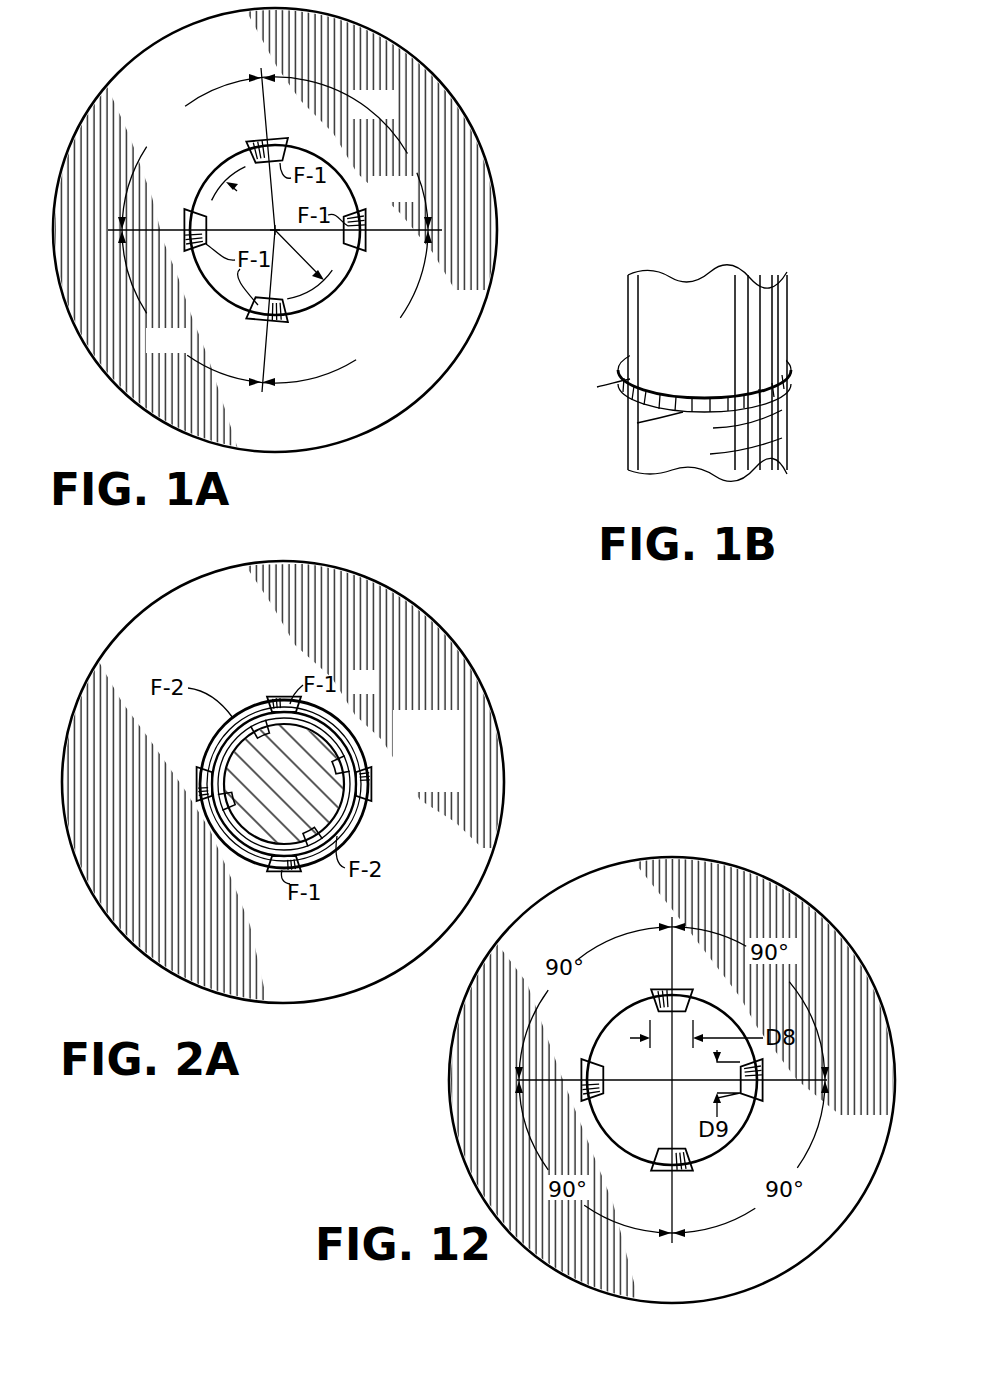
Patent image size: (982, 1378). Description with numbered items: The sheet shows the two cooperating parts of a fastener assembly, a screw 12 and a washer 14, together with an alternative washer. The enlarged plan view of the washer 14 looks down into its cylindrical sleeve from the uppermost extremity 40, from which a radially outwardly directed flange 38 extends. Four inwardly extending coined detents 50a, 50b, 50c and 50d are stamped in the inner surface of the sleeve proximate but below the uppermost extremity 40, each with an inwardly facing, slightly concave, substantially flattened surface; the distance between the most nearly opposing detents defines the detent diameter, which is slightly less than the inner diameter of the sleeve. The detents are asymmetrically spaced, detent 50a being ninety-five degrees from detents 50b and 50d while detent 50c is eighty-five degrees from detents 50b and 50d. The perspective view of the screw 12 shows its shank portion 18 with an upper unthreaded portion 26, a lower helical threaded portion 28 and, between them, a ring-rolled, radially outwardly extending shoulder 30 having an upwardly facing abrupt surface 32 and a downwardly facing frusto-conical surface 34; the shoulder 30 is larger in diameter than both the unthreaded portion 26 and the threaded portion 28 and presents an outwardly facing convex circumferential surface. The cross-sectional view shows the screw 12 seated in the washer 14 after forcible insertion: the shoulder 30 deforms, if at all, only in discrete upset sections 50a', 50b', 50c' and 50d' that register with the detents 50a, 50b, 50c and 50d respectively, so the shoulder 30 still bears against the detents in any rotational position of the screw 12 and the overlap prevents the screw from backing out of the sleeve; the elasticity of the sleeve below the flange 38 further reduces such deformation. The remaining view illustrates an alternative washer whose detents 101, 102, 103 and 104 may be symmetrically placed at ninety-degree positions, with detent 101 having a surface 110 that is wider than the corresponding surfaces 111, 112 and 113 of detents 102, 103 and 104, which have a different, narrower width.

In FIG. 1B, the screw 12 is at (707, 383).
In FIG. 2A, the screw 12 is at (227, 856).
In FIG. 1A, the washer 14 is at (410, 42).
In FIG. 2A, the washer 14 is at (443, 577).
In FIG. 1B, the shank portion 18 is at (795, 311).
In FIG. 2A, the shank portion 18 is at (334, 707).
In FIG. 1B, the upper unthreaded portion 26 is at (684, 297).
In FIG. 1B, the lower threaded portion 28 is at (786, 446).
In FIG. 1B, the shoulder 30 is at (800, 364).
In FIG. 2A, the shoulder 30 is at (362, 730).
In FIG. 1B, the upwardly facing abrupt surface 32 is at (678, 393).
In FIG. 2A, the upwardly facing abrupt surface 32 is at (353, 835).
In FIG. 1B, the downwardly facing frusto-conical surface 34 is at (683, 412).
In FIG. 1A, the flange 38 is at (275, 242).
In FIG. 2A, the flange 38 is at (205, 625).
In FIG. 1A, the uppermost extremity 40 is at (333, 272).
In FIG. 2A, the uppermost extremity 40 is at (222, 746).
In FIG. 1A, the detent 50a is at (379, 215).
In FIG. 2A, the detent 50a is at (402, 784).
In FIG. 1A, the detent 50b is at (284, 130).
In FIG. 2A, the detent 50b is at (293, 677).
In FIG. 1A, the detent 50c is at (175, 210).
In FIG. 2A, the detent 50c is at (169, 775).
In FIG. 1A, the detent 50d is at (246, 327).
In FIG. 2A, the detent 50d is at (278, 892).
In FIG. 2A, the upset section 50a' is at (394, 754).
In FIG. 2A, the upset section 50b' is at (233, 707).
In FIG. 2A, the upset section 50c' is at (187, 824).
In FIG. 2A, the upset section 50d' is at (336, 868).
In FIG. 12, the detent 101 is at (684, 996).
In FIG. 12, the detent 102 is at (757, 1096).
In FIG. 12, the detent 103 is at (688, 1166).
In FIG. 12, the detent 104 is at (588, 1068).
In FIG. 12, the surface 110 is at (660, 1014).
In FIG. 12, the surface 111 is at (752, 1046).
In FIG. 12, the surface 112 is at (662, 1152).
In FIG. 12, the surface 113 is at (600, 1088).